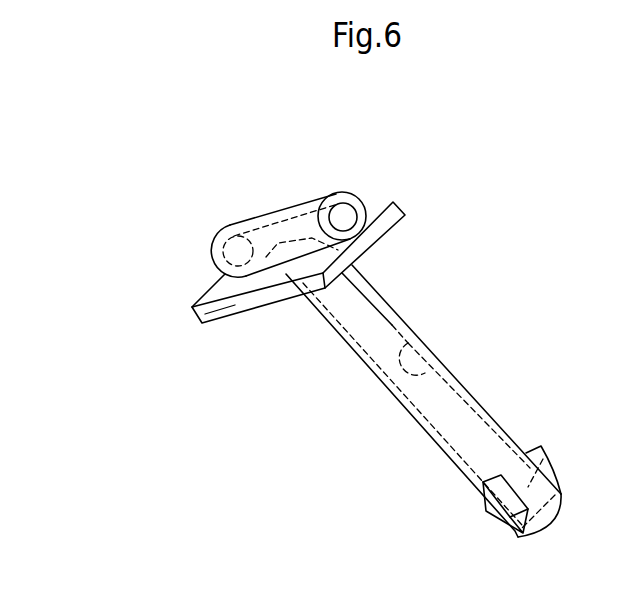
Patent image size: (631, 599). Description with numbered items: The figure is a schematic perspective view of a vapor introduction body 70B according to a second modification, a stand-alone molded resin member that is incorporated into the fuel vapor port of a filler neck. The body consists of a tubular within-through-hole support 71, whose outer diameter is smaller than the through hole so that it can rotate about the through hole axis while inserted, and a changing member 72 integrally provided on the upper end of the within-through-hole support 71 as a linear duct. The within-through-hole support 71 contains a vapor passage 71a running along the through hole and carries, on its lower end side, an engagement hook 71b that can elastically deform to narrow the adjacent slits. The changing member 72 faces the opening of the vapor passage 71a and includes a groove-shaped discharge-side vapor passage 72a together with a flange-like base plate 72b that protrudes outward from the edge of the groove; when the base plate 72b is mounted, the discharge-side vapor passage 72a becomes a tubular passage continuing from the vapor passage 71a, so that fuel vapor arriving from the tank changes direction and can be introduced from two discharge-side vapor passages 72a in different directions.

The vapor introduction body 70B is at (500, 172).
The within-through-hole support 71 is at (388, 297).
The vapor passage 71a is at (432, 372).
The engagement hook 71b is at (541, 447).
The changing member 72 is at (277, 218).
The discharge-side vapor passage 72a is at (342, 222).
The base plate 72b is at (192, 307).